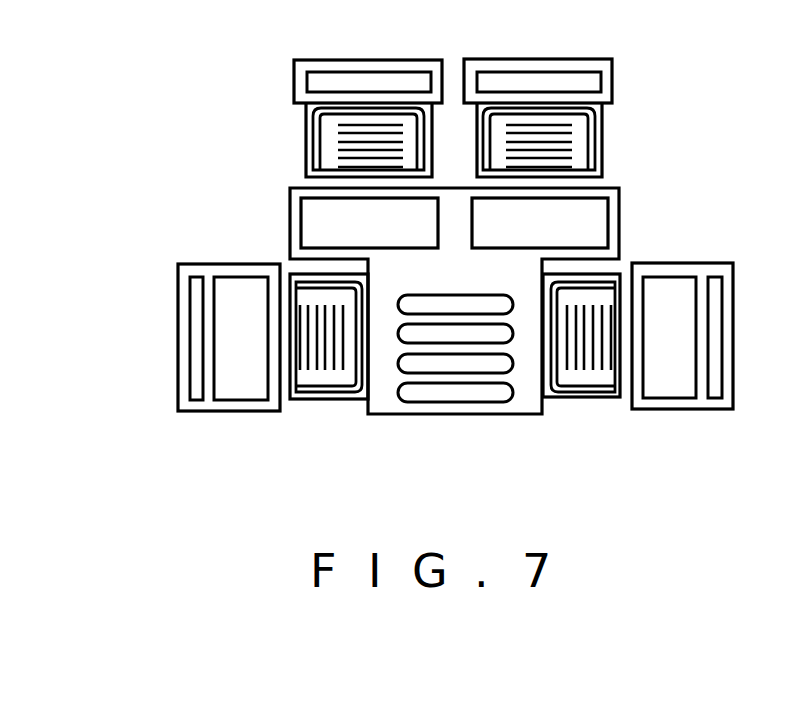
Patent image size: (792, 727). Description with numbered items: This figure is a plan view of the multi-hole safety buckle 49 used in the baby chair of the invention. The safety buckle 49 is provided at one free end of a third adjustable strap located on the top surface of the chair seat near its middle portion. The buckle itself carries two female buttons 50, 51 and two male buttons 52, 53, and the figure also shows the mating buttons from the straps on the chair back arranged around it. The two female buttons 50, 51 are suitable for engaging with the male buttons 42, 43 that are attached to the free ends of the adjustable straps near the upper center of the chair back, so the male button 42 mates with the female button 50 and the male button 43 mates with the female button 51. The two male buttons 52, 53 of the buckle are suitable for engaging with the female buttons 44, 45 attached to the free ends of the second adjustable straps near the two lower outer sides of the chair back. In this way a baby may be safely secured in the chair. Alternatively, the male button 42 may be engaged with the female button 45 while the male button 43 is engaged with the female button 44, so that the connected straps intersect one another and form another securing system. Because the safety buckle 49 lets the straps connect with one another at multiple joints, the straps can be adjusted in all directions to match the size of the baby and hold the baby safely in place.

The male button 42 is at (300, 70).
The male button 43 is at (606, 68).
The female button 44 is at (213, 405).
The female button 45 is at (697, 400).
The multi-hole safety buckle 49 is at (652, 168).
The female button 50 is at (297, 230).
The female button 51 is at (614, 226).
The male button 52 is at (312, 397).
The male button 53 is at (598, 398).